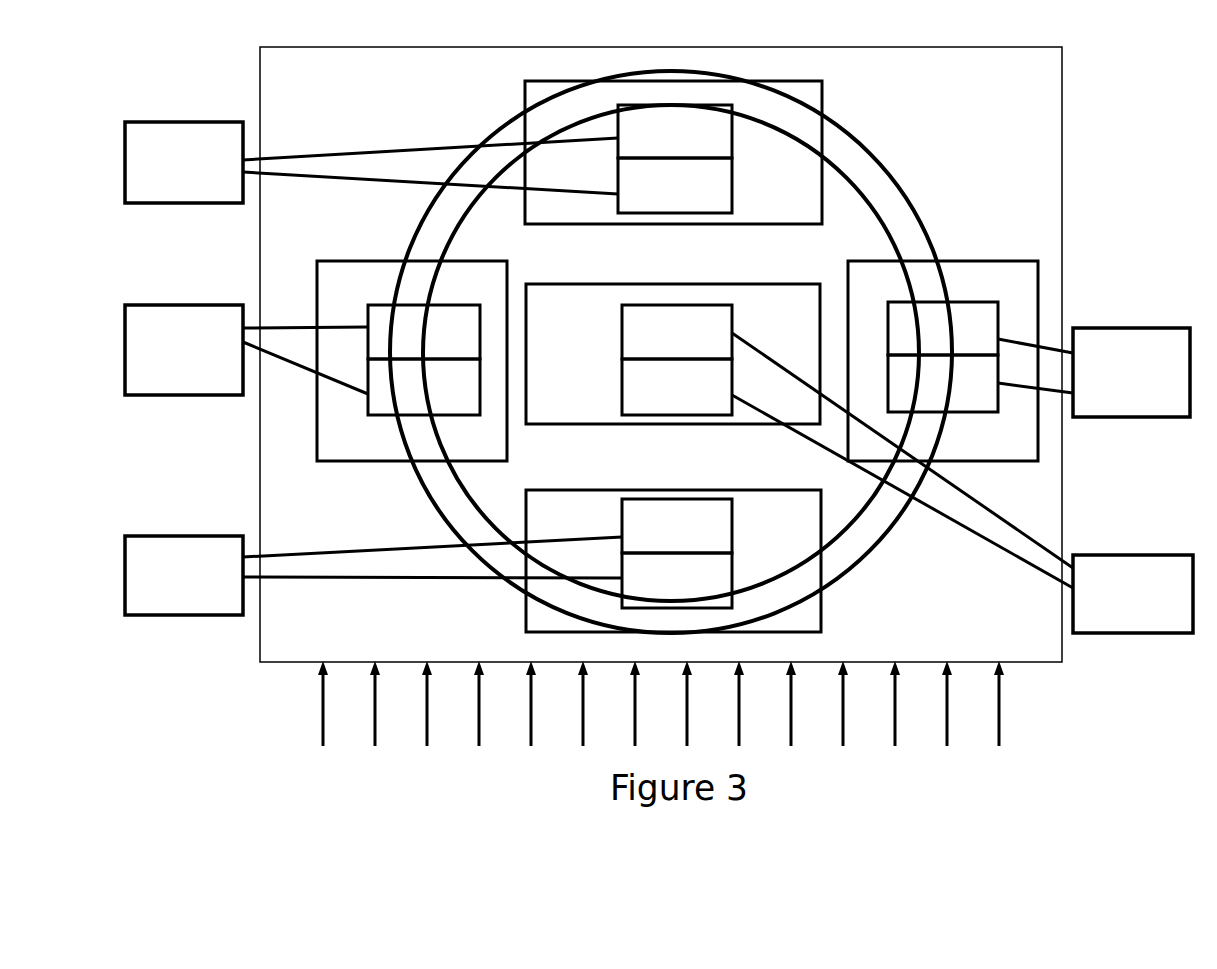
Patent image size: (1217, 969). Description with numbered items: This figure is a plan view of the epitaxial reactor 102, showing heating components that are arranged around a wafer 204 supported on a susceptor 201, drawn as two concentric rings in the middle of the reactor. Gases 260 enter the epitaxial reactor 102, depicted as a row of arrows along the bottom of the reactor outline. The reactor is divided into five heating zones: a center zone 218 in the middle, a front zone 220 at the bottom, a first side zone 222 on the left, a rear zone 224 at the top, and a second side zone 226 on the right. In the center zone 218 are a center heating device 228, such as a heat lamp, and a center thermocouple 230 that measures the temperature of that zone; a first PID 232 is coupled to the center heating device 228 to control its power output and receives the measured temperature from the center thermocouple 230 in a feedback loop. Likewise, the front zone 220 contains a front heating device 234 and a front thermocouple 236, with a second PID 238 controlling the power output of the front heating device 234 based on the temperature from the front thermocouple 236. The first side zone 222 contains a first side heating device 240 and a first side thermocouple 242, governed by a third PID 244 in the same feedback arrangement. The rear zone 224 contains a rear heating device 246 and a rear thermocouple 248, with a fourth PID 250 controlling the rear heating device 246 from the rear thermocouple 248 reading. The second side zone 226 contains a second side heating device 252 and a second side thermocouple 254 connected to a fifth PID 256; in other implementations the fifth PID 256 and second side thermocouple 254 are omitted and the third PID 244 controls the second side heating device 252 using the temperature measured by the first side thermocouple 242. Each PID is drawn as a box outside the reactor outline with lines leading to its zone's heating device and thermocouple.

The epitaxial reactor 102 is at (1063, 85).
The susceptor 201 is at (900, 187).
The wafer 204 is at (888, 241).
The center zone 218 is at (745, 284).
The front zone 220 is at (815, 617).
The first side zone 222 is at (385, 460).
The rear zone 224 is at (525, 92).
The second side zone 226 is at (1038, 306).
The center heating device 228 is at (677, 332).
The center thermocouple 230 is at (677, 387).
The first PID 232 is at (962, 483).
The front heating device 234 is at (677, 526).
The front thermocouple 236 is at (677, 580).
The second PID 238 is at (373, 575).
The first side heating device 240 is at (424, 332).
The first side thermocouple 242 is at (424, 387).
The third PID 244 is at (246, 350).
The rear heating device 246 is at (675, 131).
The rear thermocouple 248 is at (675, 185).
The fourth PID 250 is at (371, 162).
The second side heating device 252 is at (943, 328).
The second side thermocouple 254 is at (943, 383).
The fifth PID 256 is at (1094, 372).
The gases 260 is at (1048, 689).